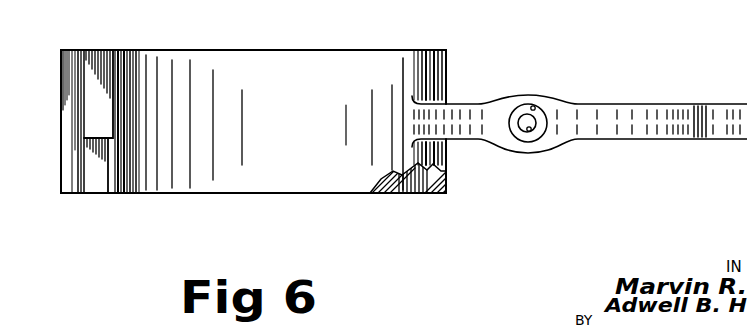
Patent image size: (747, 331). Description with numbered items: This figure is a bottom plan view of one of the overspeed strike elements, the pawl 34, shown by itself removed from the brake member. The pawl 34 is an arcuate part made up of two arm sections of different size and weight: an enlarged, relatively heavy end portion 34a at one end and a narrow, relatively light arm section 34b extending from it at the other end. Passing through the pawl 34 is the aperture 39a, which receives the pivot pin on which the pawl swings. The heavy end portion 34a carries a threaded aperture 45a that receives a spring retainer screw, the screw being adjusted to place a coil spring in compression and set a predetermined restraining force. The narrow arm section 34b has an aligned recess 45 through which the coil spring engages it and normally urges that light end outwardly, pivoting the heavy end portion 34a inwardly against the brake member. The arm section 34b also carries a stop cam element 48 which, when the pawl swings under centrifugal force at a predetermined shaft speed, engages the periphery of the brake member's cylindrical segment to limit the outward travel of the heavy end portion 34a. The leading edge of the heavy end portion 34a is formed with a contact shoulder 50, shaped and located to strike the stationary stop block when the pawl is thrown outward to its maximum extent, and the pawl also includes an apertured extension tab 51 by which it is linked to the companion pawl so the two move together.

The pawl 34 is at (379, 134).
The heavy end portion 34a is at (280, 62).
The narrow arm section 34b is at (625, 120).
The recess 45 is at (535, 106).
The threaded aperture 45a is at (529, 132).
The stop cam element 48 is at (697, 127).
The contact shoulder 50 is at (67, 143).
The apertured extension tab 51 is at (95, 187).
The pivot pin aperture 39a is at (425, 188).